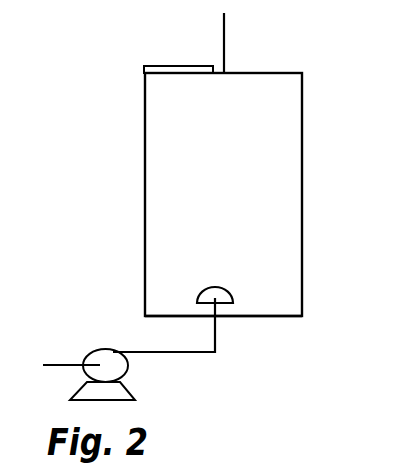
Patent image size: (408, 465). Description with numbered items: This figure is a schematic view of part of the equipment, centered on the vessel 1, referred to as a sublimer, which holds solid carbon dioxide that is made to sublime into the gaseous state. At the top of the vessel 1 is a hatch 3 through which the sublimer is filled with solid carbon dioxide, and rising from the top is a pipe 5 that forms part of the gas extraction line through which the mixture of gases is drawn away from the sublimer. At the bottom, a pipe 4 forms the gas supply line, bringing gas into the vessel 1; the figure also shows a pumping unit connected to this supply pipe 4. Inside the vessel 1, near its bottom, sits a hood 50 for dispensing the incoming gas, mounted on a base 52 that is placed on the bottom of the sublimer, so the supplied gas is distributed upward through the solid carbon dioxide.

The vessel 1 is at (178, 162).
The hatch 3 is at (173, 68).
The pipe 5 is at (224, 44).
The hood 50 is at (215, 290).
The base 52 is at (258, 318).
The pipe 4 is at (183, 352).